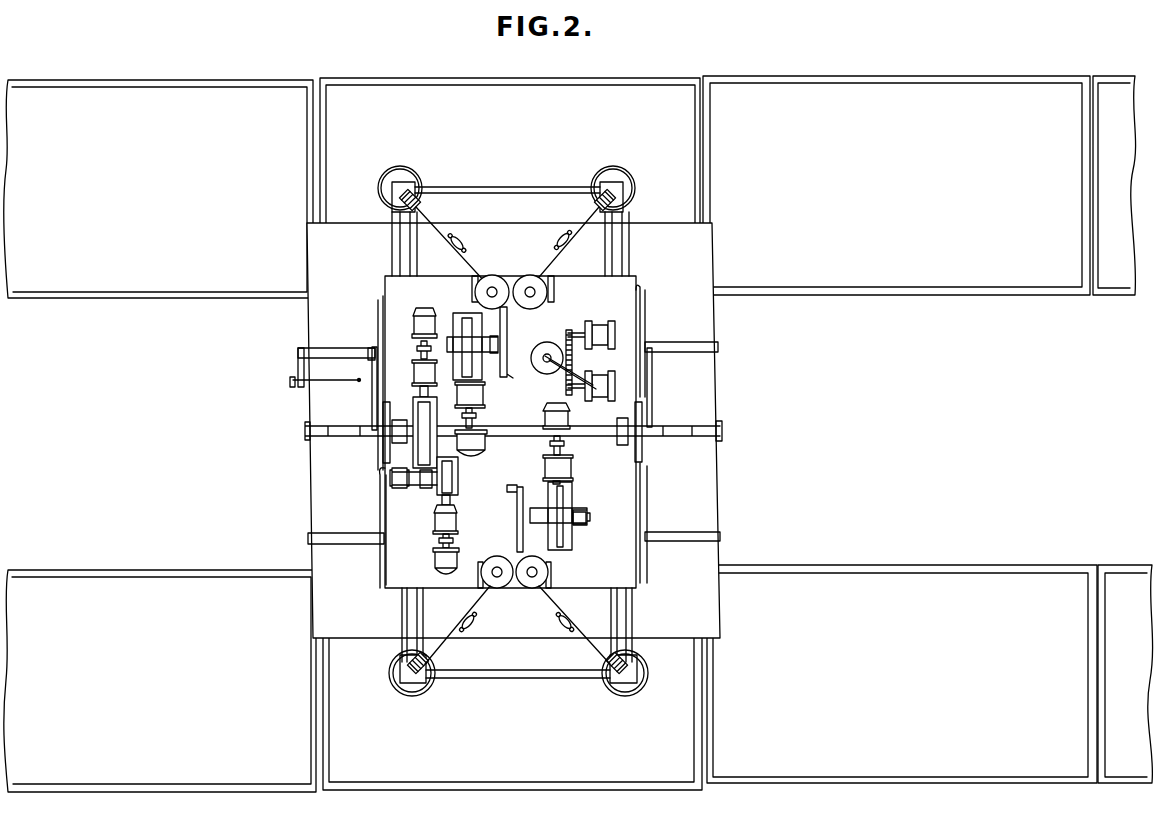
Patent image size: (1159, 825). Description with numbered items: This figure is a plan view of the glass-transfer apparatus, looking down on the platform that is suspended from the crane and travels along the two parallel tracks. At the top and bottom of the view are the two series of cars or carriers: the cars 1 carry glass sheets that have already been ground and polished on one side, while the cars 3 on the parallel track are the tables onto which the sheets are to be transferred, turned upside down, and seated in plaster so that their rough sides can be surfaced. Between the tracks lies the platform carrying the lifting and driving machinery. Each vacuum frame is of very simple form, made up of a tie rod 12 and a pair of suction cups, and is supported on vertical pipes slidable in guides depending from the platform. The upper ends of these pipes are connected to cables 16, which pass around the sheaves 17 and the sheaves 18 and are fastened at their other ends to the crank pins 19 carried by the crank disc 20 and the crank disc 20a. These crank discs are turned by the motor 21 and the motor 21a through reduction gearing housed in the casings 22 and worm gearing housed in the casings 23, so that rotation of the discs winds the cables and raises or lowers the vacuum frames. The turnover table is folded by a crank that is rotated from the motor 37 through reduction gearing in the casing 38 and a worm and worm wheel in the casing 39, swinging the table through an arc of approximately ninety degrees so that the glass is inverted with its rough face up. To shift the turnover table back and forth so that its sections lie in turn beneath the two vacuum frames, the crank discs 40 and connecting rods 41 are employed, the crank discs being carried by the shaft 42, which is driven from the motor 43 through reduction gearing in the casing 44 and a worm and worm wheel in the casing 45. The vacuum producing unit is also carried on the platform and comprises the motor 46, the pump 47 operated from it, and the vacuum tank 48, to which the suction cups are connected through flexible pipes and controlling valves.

The cars or carriers 1 is at (244, 77).
The cars or carriers 3 is at (157, 560).
The tie rod 12 is at (522, 682).
The cables 16 is at (546, 605).
The sheaves 17 is at (435, 667).
The sheaves 18 is at (488, 587).
The crank pins 19 is at (508, 490).
The crank disc 20 is at (497, 312).
The crank disc 20a is at (620, 543).
The motor 21 is at (488, 444).
The motor 21a is at (608, 419).
The casings for reduction gearing 22 is at (486, 396).
The casings for worm gearing 23 is at (472, 316).
The motor 37 is at (437, 558).
The casing for reduction gearing 38 is at (433, 523).
The casing for worm and worm wheel 39 is at (455, 471).
The crank discs 40 is at (383, 454).
The connecting rods 41 is at (372, 409).
The shaft 42 is at (564, 378).
The motor 43 is at (412, 328).
The casing for reduction gearing 44 is at (412, 363).
The casing for worm and worm wheel 45 is at (417, 402).
The motor 46 is at (605, 316).
The pump 47 is at (603, 380).
The tank 48 is at (547, 342).